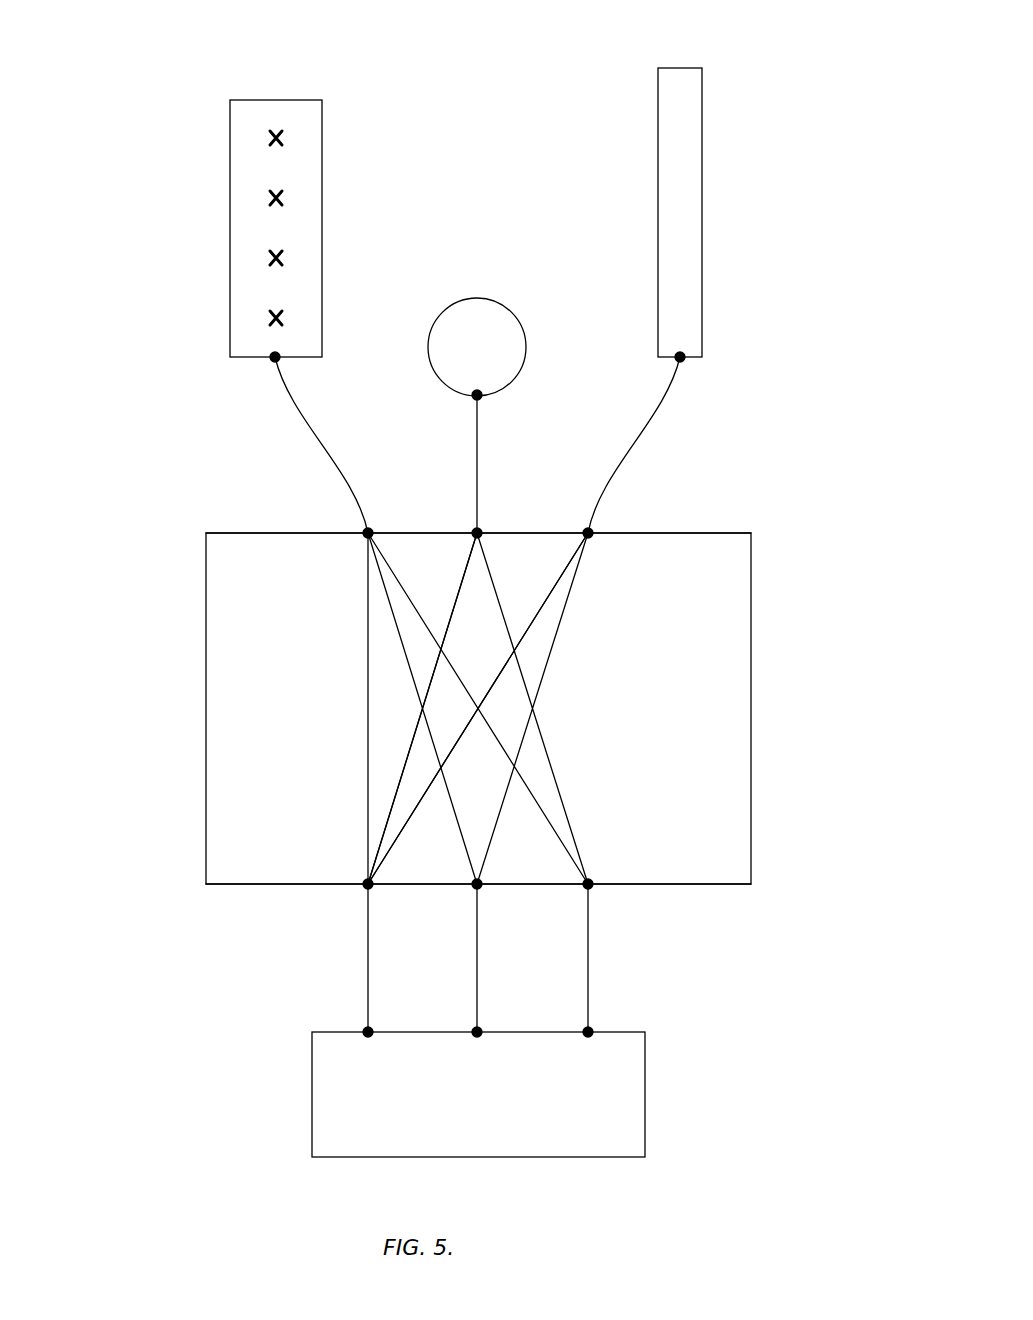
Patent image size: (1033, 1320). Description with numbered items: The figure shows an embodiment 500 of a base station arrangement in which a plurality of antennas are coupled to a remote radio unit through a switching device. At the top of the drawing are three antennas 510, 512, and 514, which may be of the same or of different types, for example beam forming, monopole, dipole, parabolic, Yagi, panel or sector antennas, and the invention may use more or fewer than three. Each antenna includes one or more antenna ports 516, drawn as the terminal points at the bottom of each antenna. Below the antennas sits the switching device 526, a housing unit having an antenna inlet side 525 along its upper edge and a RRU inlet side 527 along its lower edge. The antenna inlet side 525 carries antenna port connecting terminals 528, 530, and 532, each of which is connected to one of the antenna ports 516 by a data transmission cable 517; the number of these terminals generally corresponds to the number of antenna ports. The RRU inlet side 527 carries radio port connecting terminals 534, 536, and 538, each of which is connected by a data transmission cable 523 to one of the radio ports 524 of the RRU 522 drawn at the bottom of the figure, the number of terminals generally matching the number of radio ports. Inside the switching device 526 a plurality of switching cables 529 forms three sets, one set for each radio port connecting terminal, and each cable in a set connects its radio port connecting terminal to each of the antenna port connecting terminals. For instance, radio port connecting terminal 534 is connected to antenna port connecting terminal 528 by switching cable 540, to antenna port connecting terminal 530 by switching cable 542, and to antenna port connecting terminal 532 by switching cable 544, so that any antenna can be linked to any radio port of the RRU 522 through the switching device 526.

The embodiment 500 is at (105, 131).
The antenna 510 is at (280, 100).
The antenna 512 is at (480, 298).
The antenna 514 is at (683, 68).
The antenna port 516 is at (271, 363).
The data transmission cable 517 is at (323, 438).
The RRU 522 is at (618, 1032).
The data transmission cable 523 is at (370, 958).
The radio port 524 is at (585, 1028).
The antenna inlet side 525 is at (695, 533).
The switching device 526 is at (751, 662).
The RRU inlet side 527 is at (695, 884).
The antenna port connecting terminal 528 is at (365, 530).
The switching cables 529 is at (633, 538).
The antenna port connecting terminal 530 is at (474, 530).
The antenna port connecting terminal 532 is at (585, 530).
The radio port connecting terminal 534 is at (365, 889).
The radio port connecting terminal 536 is at (473, 889).
The radio port connecting terminal 538 is at (584, 889).
The switching cable 540 is at (368, 785).
The switching cable 542 is at (411, 743).
The switching cable 544 is at (413, 813).